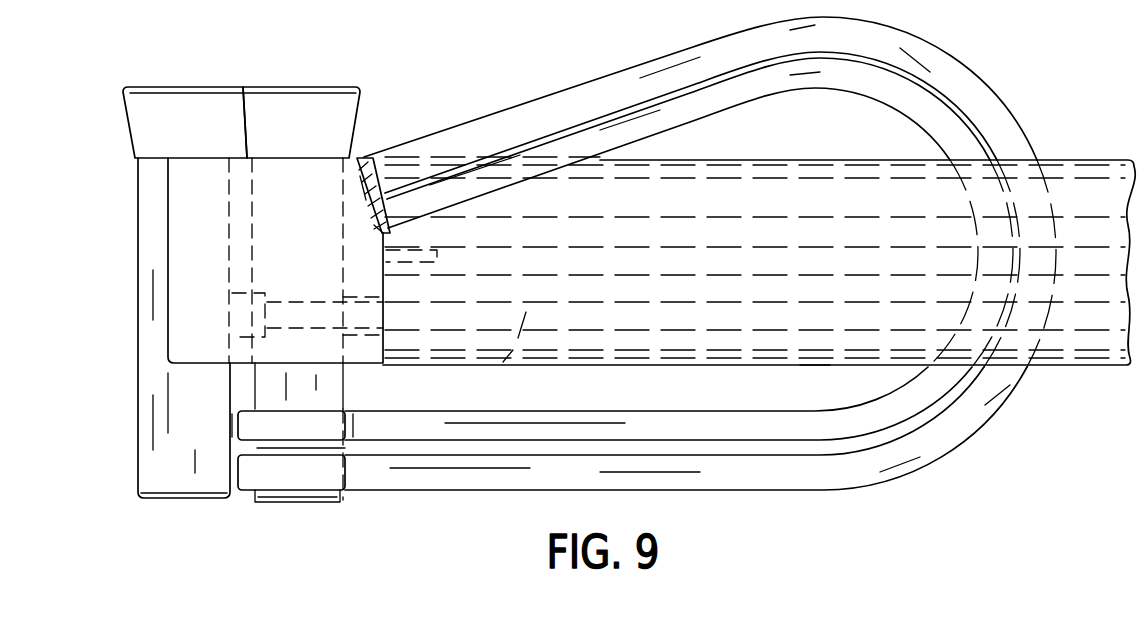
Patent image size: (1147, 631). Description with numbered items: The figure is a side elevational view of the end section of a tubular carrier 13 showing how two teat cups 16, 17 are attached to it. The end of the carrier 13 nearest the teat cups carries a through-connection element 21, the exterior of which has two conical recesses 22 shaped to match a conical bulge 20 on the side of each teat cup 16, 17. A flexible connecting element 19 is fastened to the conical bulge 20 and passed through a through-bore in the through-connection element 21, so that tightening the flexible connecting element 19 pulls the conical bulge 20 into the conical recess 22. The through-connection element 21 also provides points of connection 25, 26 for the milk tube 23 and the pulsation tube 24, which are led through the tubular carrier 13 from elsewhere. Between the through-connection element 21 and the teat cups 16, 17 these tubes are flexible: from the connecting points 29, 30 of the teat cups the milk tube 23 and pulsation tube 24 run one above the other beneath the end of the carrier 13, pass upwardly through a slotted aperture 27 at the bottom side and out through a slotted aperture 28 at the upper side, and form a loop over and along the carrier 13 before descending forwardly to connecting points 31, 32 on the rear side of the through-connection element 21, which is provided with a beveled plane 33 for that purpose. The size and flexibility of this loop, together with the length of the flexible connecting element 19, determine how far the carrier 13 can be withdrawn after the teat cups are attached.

The carrier 13 is at (1100, 158).
The teat cup 16 is at (165, 100).
The teat cup 17 is at (302, 102).
The flexible connecting element 19 is at (493, 359).
The conical bulge 20 is at (230, 316).
The through-connection element 21 is at (273, 177).
The conical recess 22 is at (263, 288).
The milk tube 23 is at (950, 78).
The pulsation tube 24 is at (640, 422).
The point of connection 25 is at (432, 150).
The point of connection 26 is at (438, 262).
The slotted aperture 27 is at (818, 366).
The slotted aperture 28 is at (848, 160).
The connecting point 29 is at (238, 470).
The connecting point 30 is at (232, 418).
The connecting point 31 is at (368, 170).
The connecting point 32 is at (368, 240).
The beveled plane 33 is at (364, 206).